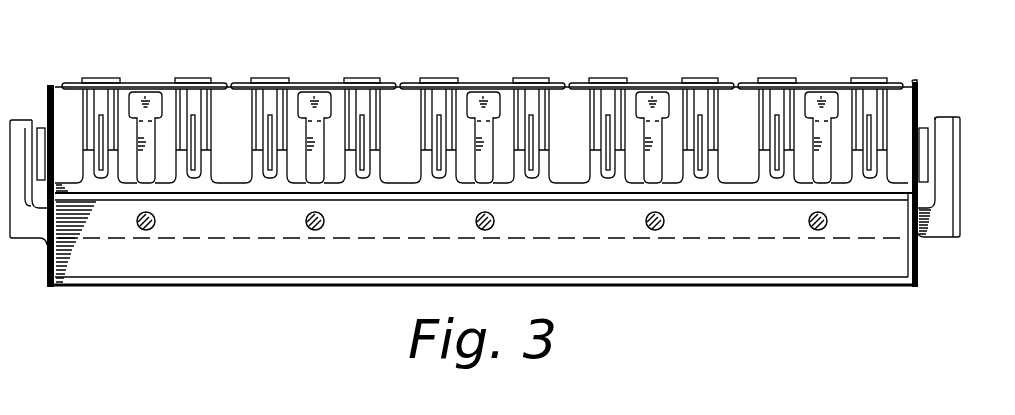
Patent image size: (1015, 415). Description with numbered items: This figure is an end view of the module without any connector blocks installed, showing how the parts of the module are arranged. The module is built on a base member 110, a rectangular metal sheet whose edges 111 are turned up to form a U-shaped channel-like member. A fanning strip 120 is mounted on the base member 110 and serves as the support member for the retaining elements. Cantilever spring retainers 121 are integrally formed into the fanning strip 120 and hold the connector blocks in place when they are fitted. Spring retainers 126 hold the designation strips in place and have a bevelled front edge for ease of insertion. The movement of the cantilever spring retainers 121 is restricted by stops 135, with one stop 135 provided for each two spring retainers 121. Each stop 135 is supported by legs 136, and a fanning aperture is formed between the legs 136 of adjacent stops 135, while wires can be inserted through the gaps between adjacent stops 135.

The base member 110 is at (883, 286).
The edges 111 is at (752, 218).
The fanning strip 120 is at (918, 98).
The cantilever spring retainer 121 is at (607, 80).
The spring retainer 126 is at (660, 100).
The stop 135 is at (641, 86).
The leg 136 is at (703, 128).